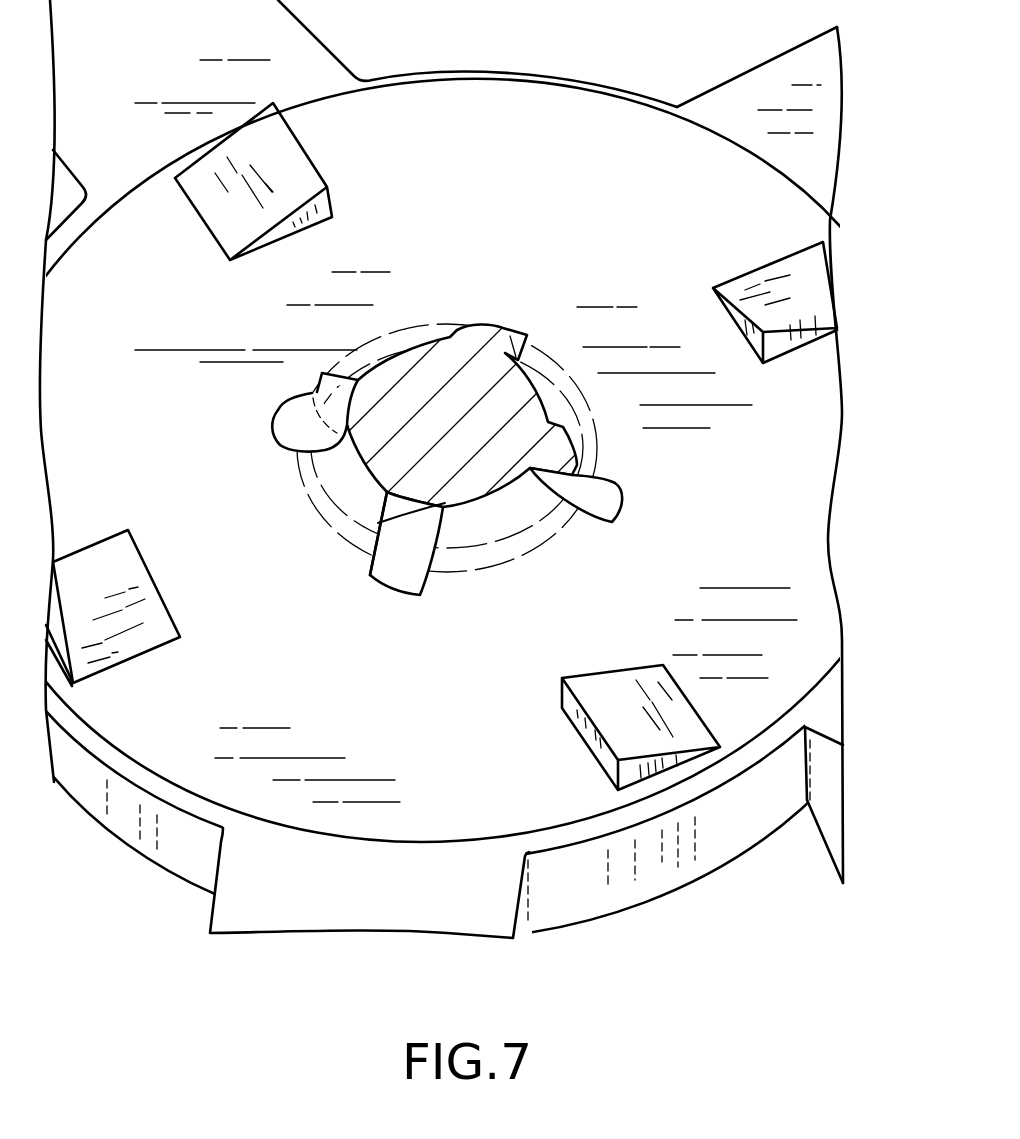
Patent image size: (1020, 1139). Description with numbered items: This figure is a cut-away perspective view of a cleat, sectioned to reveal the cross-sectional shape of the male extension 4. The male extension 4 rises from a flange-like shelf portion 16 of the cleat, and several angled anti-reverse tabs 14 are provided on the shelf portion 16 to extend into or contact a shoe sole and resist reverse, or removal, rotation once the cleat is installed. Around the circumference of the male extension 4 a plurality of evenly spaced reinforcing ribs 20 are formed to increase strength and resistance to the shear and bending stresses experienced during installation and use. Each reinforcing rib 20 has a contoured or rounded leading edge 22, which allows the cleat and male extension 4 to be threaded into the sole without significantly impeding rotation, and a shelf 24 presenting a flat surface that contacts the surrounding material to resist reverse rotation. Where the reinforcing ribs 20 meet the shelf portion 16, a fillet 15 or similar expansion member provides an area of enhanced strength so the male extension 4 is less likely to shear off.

The male extension 4 is at (462, 302).
The anti-reverse tabs 14 is at (790, 280).
The fillet 15 is at (375, 578).
The shelf portion 16 is at (790, 514).
The reinforcing rib 20 is at (266, 429).
The leading edge 22 is at (425, 555).
The shelf 24 is at (559, 503).